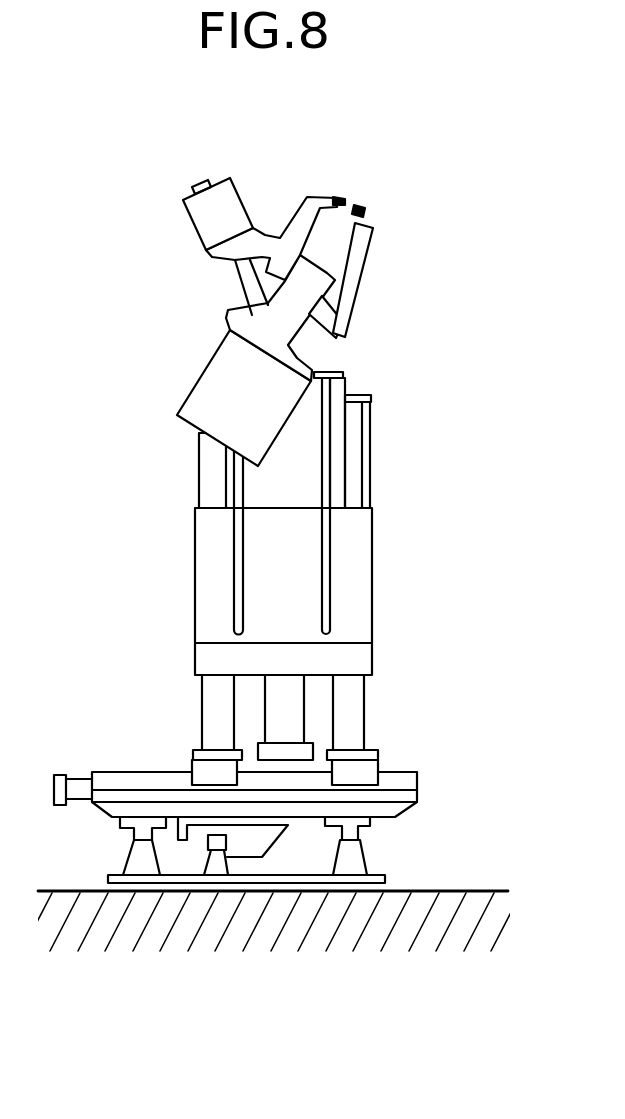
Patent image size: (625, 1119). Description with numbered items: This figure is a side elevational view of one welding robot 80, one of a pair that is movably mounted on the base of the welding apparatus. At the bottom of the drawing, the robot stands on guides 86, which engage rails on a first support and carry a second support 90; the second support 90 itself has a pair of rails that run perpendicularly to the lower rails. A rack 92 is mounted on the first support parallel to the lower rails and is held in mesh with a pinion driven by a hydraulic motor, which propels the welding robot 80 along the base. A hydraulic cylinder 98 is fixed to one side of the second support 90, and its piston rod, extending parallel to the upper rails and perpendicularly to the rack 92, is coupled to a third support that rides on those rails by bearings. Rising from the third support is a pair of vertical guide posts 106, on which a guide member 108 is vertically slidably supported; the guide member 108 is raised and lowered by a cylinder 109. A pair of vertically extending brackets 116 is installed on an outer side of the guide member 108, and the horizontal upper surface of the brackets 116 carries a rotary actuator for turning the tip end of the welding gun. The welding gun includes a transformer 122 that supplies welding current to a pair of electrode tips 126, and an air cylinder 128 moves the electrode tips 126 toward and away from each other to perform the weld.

The welding robot 80 is at (280, 434).
The guides 86 is at (120, 825).
The second support 90 is at (408, 782).
The rack 92 is at (207, 851).
The hydraulic cylinder 98 is at (76, 786).
The vertical guide posts 106 is at (209, 710).
The guide member 108 is at (358, 578).
The cylinder 109 is at (287, 713).
The vertically extending brackets 116 is at (243, 552).
The transformer 122 is at (221, 368).
The electrode tips 126 is at (341, 195).
The air cylinder 128 is at (229, 192).